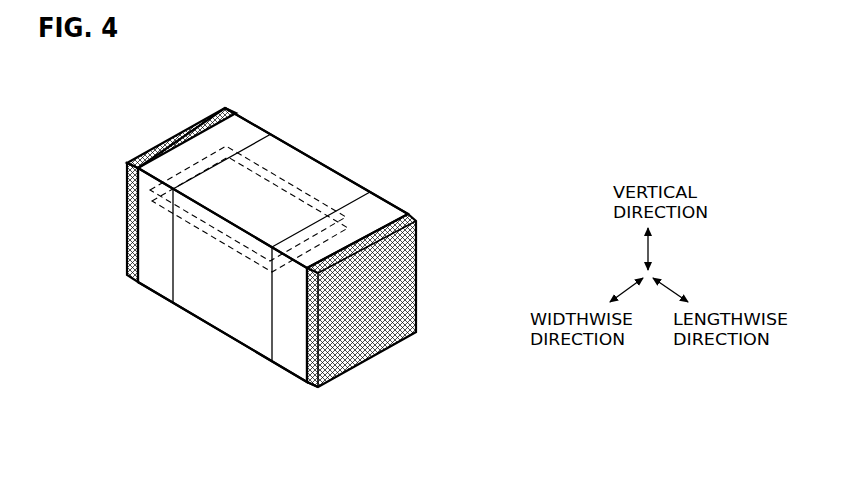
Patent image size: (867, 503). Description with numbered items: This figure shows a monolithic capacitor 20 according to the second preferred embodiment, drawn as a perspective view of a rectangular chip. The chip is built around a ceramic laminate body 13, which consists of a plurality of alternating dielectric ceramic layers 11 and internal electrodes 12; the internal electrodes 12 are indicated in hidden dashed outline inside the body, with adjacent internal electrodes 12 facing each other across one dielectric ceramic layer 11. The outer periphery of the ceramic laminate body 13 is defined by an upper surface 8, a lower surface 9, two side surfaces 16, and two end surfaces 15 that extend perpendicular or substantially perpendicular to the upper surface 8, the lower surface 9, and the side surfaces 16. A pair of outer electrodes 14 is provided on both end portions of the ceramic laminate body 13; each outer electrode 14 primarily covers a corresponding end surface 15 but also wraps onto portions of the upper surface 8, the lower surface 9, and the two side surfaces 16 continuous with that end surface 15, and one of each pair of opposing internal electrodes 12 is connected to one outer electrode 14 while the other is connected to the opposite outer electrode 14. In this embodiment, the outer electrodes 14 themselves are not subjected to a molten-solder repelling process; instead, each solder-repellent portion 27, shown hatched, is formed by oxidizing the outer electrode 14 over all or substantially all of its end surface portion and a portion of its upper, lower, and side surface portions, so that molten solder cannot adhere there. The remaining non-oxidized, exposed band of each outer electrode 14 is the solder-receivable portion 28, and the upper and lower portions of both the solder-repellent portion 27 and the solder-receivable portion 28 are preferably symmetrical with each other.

The monolithic capacitor 20 is at (338, 130).
The upper surface 8 is at (310, 180).
The lower surface 9 is at (217, 307).
The dielectric ceramic layer 11 is at (250, 242).
The internal electrode 12 is at (212, 230).
The ceramic laminate body 13 is at (253, 352).
The outer electrode 14 is at (238, 133).
The end surface 15 is at (352, 343).
The side surface 16 is at (220, 313).
The solder-repellent portion 27 is at (127, 200).
The solder-receivable portion 28 is at (163, 228).